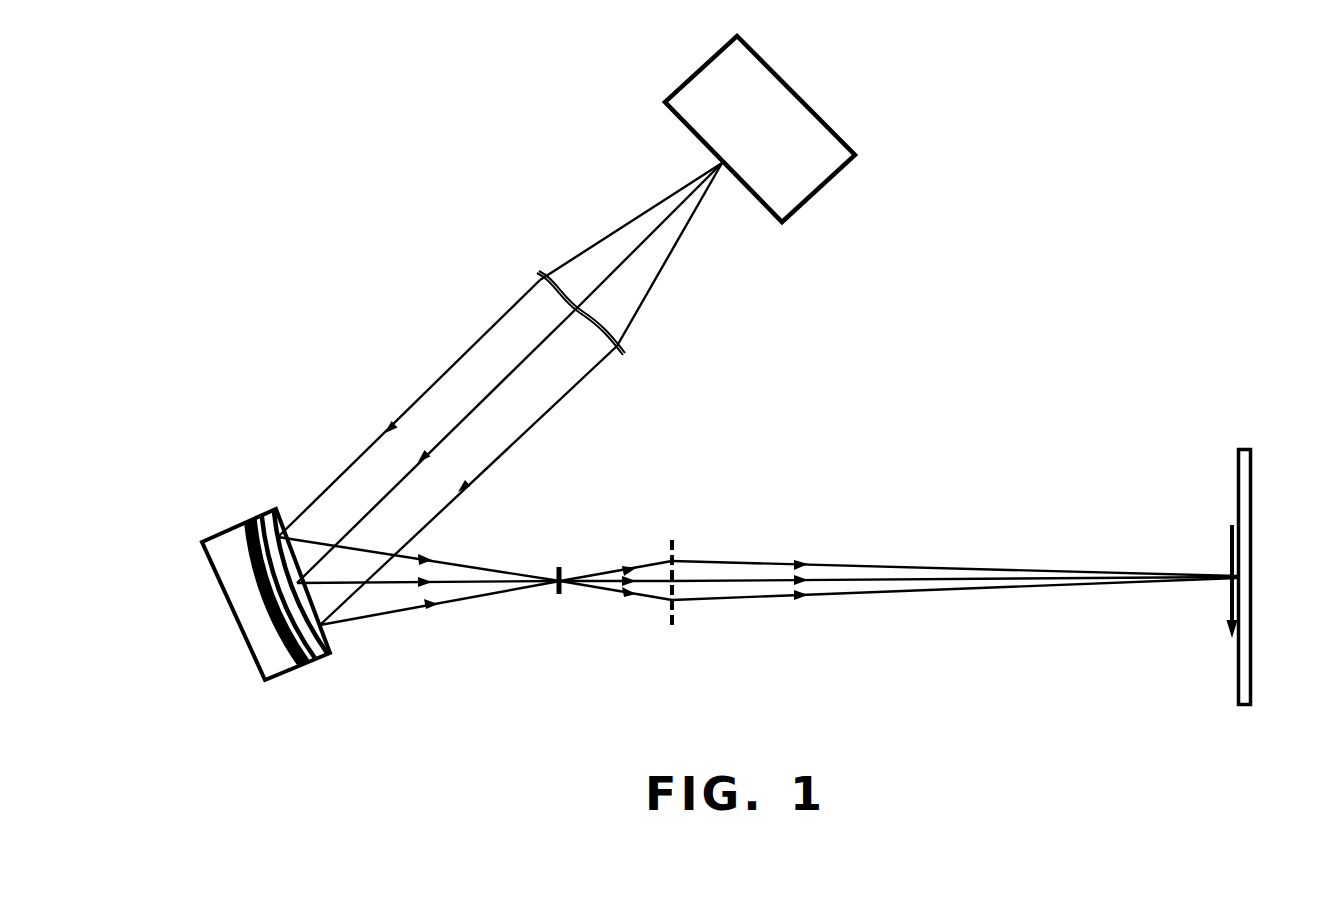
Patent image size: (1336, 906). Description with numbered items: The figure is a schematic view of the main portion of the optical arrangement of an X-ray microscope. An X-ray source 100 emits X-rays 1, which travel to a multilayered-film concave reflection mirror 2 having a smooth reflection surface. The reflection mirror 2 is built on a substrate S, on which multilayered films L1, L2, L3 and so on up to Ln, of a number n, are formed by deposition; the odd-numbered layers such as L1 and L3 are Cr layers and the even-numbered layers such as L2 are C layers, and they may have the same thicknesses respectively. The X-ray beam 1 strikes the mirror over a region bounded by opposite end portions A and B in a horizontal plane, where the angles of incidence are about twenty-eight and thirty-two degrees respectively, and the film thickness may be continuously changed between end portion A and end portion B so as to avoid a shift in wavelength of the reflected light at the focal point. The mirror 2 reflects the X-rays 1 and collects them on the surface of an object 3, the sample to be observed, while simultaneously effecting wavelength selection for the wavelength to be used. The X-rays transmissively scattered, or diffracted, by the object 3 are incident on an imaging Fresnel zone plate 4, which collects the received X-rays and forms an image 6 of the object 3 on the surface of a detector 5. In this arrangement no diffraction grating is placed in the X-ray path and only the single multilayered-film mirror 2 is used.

The X-ray source 100 is at (812, 108).
The X-rays 1 is at (480, 338).
The multilayered-film concave reflection mirror 2 is at (222, 530).
The substrate S is at (253, 615).
The first multilayered film layer L1 is at (303, 667).
The second multilayered film layer L2 is at (313, 663).
The third multilayered film layer L3 is at (318, 667).
The n-th multilayered film layer Ln is at (330, 657).
The end portion A of the X-ray beam A is at (330, 626).
The end portion B of the X-ray beam B is at (299, 513).
The object 3 is at (560, 570).
The imaging Fresnel zone plate 4 is at (672, 540).
The detector 5 is at (1252, 503).
The image 6 is at (1230, 597).